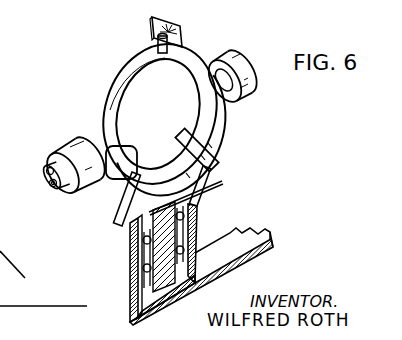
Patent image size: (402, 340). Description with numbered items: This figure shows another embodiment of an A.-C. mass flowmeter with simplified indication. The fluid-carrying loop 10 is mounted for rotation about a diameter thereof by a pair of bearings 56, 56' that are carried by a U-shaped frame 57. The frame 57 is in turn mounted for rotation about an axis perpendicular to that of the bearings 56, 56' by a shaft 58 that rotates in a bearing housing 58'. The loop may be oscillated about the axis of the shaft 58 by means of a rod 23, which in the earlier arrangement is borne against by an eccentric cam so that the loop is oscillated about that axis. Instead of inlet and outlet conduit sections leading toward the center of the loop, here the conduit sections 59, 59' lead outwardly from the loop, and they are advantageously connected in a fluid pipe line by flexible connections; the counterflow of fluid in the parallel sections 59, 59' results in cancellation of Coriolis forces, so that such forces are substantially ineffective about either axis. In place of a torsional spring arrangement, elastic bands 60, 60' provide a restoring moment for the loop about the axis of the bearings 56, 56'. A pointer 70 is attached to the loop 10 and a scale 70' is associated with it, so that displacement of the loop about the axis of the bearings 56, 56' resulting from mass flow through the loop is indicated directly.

The loop 10 is at (132, 80).
The rod 23 is at (223, 183).
The bearing 56 is at (73, 157).
The bearing 56' is at (243, 74).
The U-shaped frame 57 is at (228, 127).
The shaft 58 is at (201, 263).
The bearing housing 58' is at (118, 268).
The conduit section 59 is at (42, 170).
The conduit section 59' is at (49, 199).
The elastic band 60 is at (129, 185).
The elastic band 60' is at (186, 163).
The pointer 70 is at (145, 42).
The scale 70' is at (177, 24).